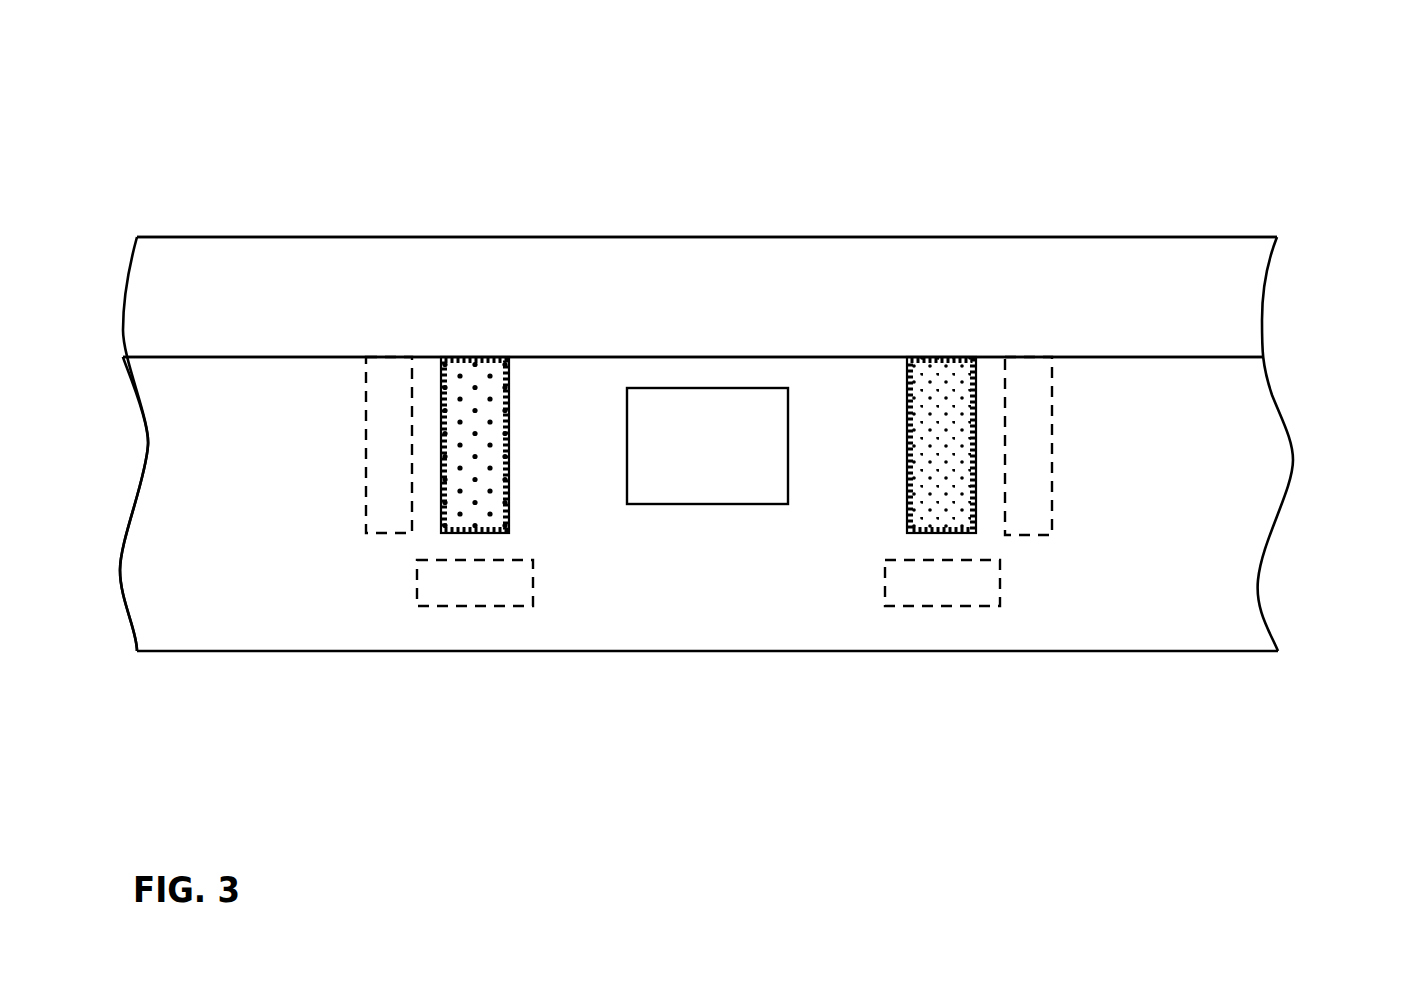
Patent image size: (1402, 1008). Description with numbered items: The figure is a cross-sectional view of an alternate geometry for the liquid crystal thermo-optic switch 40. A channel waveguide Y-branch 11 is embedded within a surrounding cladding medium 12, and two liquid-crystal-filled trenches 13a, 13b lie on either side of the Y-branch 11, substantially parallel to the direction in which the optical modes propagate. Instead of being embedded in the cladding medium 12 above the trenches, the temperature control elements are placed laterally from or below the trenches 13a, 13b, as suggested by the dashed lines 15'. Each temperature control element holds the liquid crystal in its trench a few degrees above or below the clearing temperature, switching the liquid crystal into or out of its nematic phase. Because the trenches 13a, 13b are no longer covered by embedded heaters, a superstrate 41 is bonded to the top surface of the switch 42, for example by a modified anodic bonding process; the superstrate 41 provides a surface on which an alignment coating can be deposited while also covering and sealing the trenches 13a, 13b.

The liquid crystal thermo-optic switch 40 is at (558, 230).
The superstrate 41 is at (280, 288).
The top surface of the switch 42 is at (822, 357).
The cladding medium 12 is at (175, 470).
The channel waveguide Y-branch 11 is at (707, 408).
The upper trench 13a is at (441, 533).
The trench 13b is at (976, 533).
The alternate temperature control element positions 15' is at (868, 558).